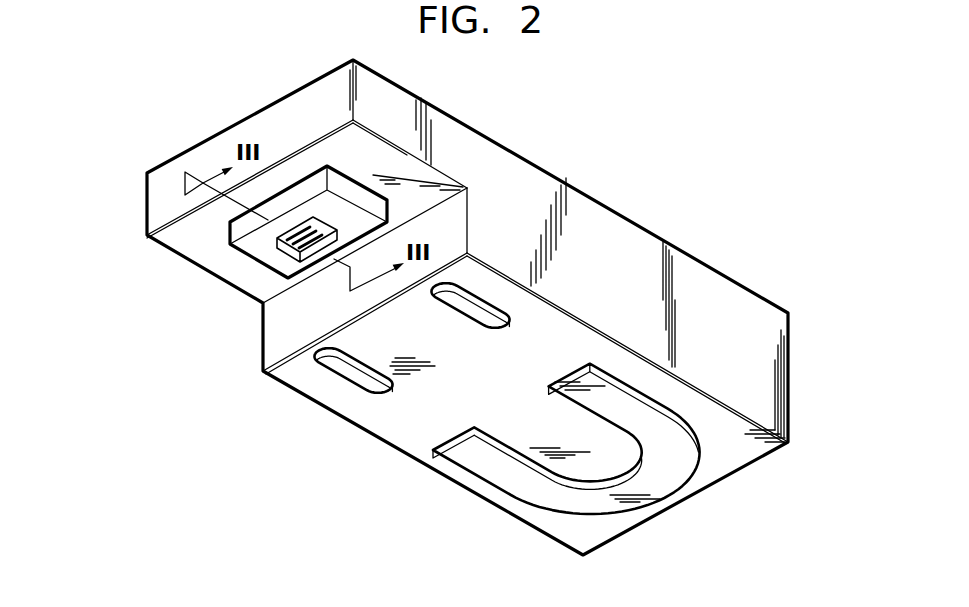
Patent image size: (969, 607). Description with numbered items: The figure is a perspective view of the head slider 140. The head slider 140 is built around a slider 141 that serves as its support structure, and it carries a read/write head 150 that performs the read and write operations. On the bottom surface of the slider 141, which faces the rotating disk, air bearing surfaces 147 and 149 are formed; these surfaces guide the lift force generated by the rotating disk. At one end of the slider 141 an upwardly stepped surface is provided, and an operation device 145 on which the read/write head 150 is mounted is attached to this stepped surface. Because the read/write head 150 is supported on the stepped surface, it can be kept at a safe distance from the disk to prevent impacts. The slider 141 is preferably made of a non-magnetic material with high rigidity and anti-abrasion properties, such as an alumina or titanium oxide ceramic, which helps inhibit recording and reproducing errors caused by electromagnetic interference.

The head slider 140 is at (138, 152).
The slider 141 is at (597, 220).
The operation device 145 is at (230, 228).
The air bearing surface 147 is at (345, 383).
The air bearing surface 149 is at (480, 467).
The read/write head 150 is at (284, 244).